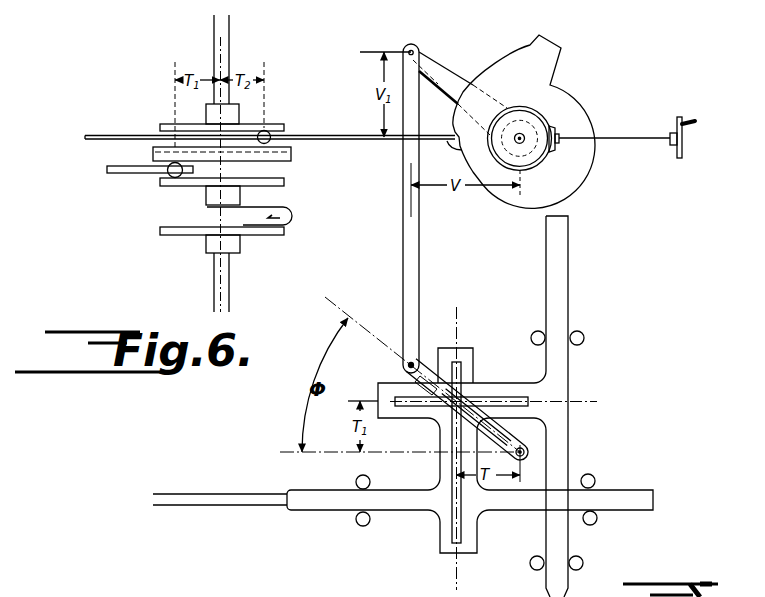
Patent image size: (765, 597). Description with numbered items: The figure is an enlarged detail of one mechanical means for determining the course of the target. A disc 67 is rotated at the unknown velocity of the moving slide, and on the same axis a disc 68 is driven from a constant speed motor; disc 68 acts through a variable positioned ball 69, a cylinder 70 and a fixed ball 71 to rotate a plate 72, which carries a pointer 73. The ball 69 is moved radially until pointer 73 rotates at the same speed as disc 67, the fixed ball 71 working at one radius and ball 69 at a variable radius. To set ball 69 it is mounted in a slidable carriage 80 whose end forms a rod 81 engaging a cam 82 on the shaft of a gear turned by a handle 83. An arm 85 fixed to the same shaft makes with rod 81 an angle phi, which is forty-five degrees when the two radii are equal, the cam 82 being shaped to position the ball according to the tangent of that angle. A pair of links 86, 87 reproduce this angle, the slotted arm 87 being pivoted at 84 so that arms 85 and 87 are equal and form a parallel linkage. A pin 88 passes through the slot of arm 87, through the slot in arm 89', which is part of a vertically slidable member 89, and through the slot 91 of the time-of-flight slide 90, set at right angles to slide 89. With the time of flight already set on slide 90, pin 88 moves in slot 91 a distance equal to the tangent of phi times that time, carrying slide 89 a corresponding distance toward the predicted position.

The disc 67 is at (168, 236).
The disc 68 is at (160, 124).
The variable positioned ball 69 is at (267, 132).
The cylinder 70 is at (291, 154).
The fixed ball 71 is at (173, 176).
The plate 72 is at (193, 184).
The pointer 73 is at (290, 213).
The slidable carriage 80 is at (84, 138).
The rod 81 is at (469, 157).
The cam 82 is at (546, 53).
The handle 83 is at (634, 137).
The pivot 84 is at (537, 453).
The arm 85 is at (438, 63).
The link 86 is at (415, 275).
The arm 87 is at (481, 396).
The pin 88 is at (467, 378).
The vertically slidable member 89 is at (493, 406).
The slotted arm 89' is at (388, 374).
The time-of-flight slide 90 is at (318, 508).
The slot 91 is at (452, 530).